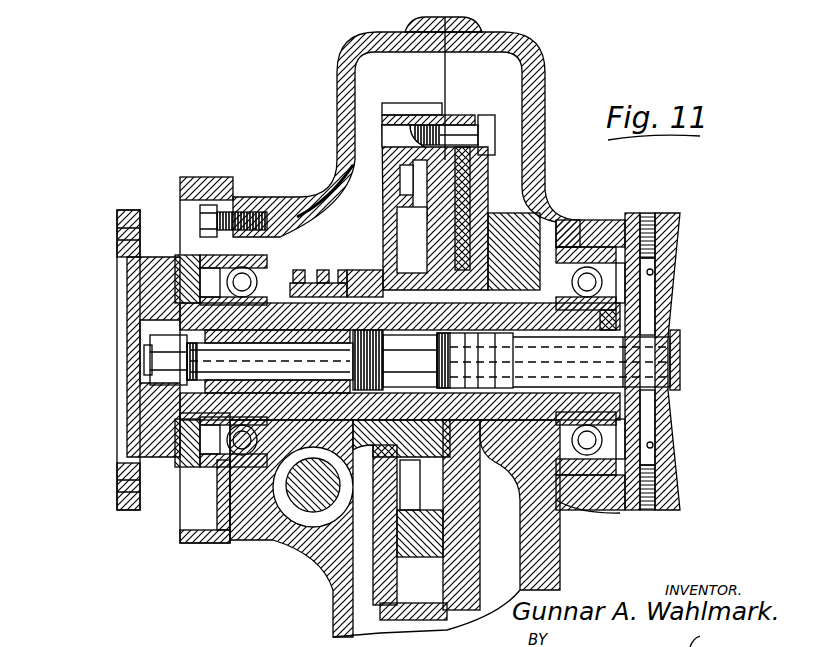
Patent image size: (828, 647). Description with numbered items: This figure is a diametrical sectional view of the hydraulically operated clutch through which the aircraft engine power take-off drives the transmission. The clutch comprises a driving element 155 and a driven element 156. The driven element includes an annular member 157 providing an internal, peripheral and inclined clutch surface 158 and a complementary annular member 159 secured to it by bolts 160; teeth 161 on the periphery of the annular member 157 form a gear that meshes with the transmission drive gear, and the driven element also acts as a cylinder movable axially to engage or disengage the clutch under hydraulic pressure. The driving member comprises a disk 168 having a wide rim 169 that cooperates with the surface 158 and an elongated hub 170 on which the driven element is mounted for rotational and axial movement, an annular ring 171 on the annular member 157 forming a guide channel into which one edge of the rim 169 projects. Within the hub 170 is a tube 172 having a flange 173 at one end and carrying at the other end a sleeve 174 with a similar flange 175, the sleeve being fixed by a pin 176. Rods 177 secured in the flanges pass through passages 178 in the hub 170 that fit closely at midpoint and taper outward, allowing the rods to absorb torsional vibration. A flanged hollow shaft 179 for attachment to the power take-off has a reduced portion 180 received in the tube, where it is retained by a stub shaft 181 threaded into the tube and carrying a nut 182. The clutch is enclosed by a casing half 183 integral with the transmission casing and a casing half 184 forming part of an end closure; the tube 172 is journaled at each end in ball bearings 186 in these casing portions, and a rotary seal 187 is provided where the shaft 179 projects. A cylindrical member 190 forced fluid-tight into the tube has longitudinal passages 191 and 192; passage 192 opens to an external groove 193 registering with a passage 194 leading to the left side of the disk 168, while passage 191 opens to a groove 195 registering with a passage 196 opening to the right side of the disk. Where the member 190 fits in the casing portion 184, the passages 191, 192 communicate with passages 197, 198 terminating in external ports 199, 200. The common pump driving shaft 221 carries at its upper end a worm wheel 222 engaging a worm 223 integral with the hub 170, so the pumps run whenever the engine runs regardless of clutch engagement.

The driving element 155 is at (340, 265).
The driven element 156 is at (437, 100).
The annular member 157 is at (410, 170).
The inclined clutch surface 158 is at (453, 135).
The complementary annular member 159 is at (478, 200).
The bolts 160 is at (495, 133).
The teeth 161 is at (393, 107).
The disk 168 is at (450, 220).
The rim 169 is at (470, 178).
The hub 170 is at (548, 237).
The annular ring 171 is at (355, 183).
The tube 172 is at (270, 361).
The flange 173 is at (307, 260).
The sleeve 174 is at (612, 302).
The flange 175 is at (590, 240).
The pin 176 is at (614, 330).
The rods 177 is at (420, 335).
The passages 178 is at (318, 267).
The flanged hollow shaft 179 is at (150, 295).
The reduced portion 180 is at (277, 348).
The stub shaft 181 is at (277, 370).
The nut 182 is at (150, 385).
The casing portion half 183 is at (337, 103).
The casing portion half 184 is at (528, 55).
The ball bearings 186 is at (215, 470).
The rotary seal 187 is at (197, 255).
The cylindrical member 190 is at (625, 423).
The passage 191 is at (670, 347).
The passage 192 is at (672, 372).
The external groove 193 is at (425, 393).
The passage 194 is at (462, 495).
The external groove 195 is at (470, 300).
The passage 196 is at (500, 460).
The passage 197 is at (653, 272).
The passage 198 is at (653, 445).
The external port 199 is at (655, 215).
The external port 200 is at (657, 510).
The common driving shaft 221 is at (318, 497).
The worm wheel 222 is at (312, 530).
The worm 223 is at (258, 545).